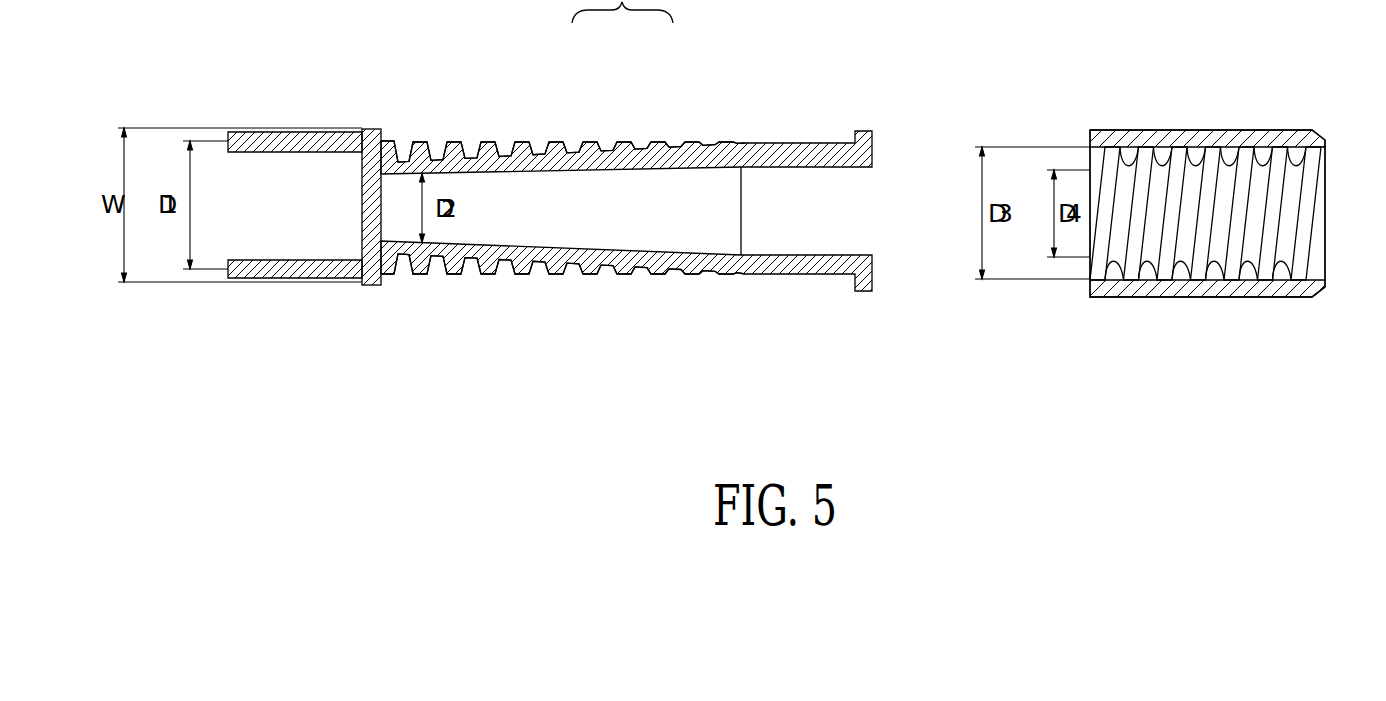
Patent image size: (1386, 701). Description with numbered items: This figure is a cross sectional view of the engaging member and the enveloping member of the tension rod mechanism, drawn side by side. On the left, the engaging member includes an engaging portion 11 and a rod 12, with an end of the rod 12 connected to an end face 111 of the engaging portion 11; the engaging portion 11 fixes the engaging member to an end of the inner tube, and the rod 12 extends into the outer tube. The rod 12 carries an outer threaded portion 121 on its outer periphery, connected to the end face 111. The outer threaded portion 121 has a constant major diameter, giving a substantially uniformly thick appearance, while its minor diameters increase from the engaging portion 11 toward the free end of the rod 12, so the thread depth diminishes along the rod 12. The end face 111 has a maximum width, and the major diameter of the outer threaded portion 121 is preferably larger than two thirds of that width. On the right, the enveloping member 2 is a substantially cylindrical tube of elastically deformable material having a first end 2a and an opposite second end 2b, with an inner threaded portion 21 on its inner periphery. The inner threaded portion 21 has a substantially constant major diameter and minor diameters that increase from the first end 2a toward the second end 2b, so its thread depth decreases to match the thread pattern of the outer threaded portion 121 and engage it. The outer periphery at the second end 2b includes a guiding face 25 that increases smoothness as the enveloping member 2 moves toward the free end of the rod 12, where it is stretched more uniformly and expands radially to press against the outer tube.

The engaging portion 11 is at (348, 131).
The rod 12 is at (828, 143).
The end face 111 is at (387, 286).
The outer threaded portion 121 is at (518, 275).
The enveloping member 2 is at (1223, 215).
The inner threaded portion 21 is at (1260, 268).
The first end 2a is at (1098, 293).
The second end 2b is at (1308, 291).
The guiding face 25 is at (1318, 295).